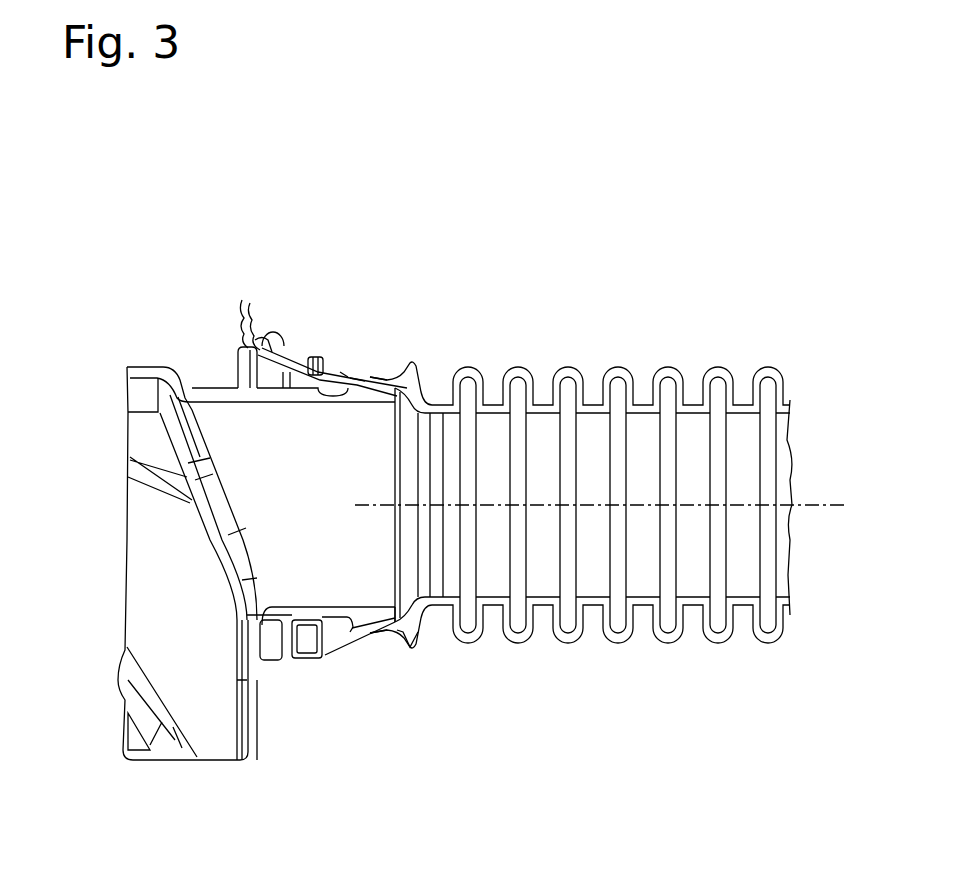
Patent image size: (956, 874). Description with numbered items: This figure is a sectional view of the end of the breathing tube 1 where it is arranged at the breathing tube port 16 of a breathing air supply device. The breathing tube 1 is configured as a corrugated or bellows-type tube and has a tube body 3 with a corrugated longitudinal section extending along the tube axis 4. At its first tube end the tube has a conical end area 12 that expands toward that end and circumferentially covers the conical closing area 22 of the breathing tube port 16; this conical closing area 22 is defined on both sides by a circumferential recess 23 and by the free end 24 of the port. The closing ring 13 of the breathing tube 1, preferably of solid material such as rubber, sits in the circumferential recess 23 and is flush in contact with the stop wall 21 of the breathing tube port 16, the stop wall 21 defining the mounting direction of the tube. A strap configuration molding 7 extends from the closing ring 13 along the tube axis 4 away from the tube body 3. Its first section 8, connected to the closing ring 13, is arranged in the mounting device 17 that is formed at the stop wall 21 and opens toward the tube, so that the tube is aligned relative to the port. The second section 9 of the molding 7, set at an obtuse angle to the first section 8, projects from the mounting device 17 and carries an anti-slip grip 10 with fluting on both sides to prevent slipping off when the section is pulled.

The breathing tube 1 is at (634, 240).
The tube body 3 is at (662, 368).
The tube axis 4 is at (832, 505).
The strap configuration molding 7 is at (273, 300).
The first section 8 is at (301, 373).
The second section 9 is at (243, 300).
The anti-slip grip 10 is at (232, 326).
The conical end area 12 is at (384, 358).
The closing ring 13 is at (340, 370).
The breathing tube port 16 is at (292, 660).
The mounting device 17 is at (260, 380).
The stop wall 21 is at (312, 658).
The conical closing area 22 is at (378, 644).
The circumferential recess 23 is at (335, 640).
The free end 24 is at (395, 625).